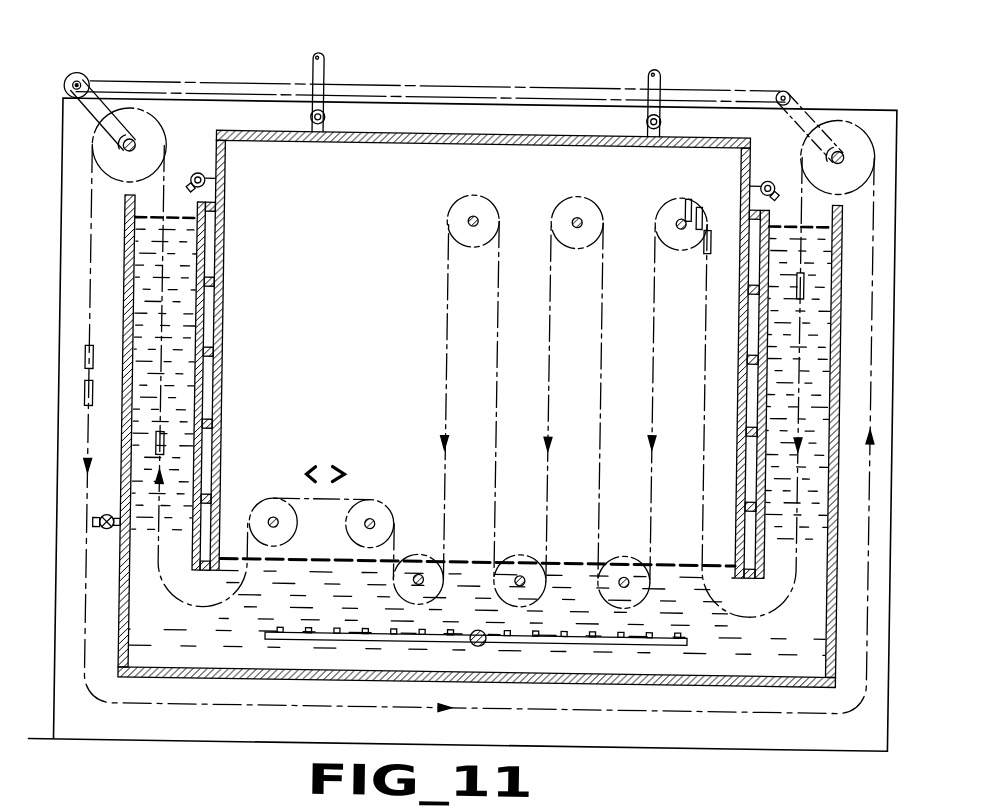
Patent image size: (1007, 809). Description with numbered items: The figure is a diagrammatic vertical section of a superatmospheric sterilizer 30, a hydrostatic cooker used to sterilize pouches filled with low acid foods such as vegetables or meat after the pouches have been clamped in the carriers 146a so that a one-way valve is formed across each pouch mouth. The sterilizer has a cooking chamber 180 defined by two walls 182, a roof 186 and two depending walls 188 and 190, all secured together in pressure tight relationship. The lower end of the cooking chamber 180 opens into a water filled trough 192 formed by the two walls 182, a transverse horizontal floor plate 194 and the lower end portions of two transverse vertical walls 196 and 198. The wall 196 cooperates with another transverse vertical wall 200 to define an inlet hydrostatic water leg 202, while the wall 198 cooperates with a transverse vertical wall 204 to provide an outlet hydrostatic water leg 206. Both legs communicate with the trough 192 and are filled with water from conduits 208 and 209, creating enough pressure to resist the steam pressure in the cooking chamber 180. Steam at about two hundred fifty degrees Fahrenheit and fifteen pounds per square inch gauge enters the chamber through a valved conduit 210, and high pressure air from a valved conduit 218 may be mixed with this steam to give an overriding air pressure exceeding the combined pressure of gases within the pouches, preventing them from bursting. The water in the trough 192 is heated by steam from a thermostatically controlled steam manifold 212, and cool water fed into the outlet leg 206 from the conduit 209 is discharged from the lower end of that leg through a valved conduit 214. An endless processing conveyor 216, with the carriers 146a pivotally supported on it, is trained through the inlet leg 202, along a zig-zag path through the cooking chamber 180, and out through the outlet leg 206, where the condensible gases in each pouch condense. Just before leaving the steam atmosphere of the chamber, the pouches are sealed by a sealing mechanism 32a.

The superatmospheric sterilizer 30 is at (453, 78).
The sealing mechanism 32a is at (334, 459).
The carriers 146a is at (98, 357).
The cooking chamber 180 is at (480, 340).
The walls 182 is at (346, 300).
The roof 186 is at (278, 128).
The depending wall 188 is at (222, 193).
The depending wall 190 is at (742, 154).
The water filled trough 192 is at (480, 453).
The transverse horizontal floor plate 194 is at (261, 668).
The transverse vertical wall 196 is at (836, 617).
The transverse vertical wall 198 is at (136, 616).
The transverse vertical wall 200 is at (768, 456).
The inlet hydrostatic water leg 202 is at (792, 412).
The transverse vertical wall 204 is at (207, 294).
The outlet hydrostatic water leg 206 is at (199, 256).
The conduit 208 is at (762, 172).
The conduit 209 is at (206, 174).
The valved conduit 210 is at (325, 62).
The thermostatically controlled steam manifold 212 is at (479, 637).
The valved conduit 214 is at (99, 522).
The endless processing conveyor 216 is at (449, 352).
The valved conduit 218 is at (661, 67).